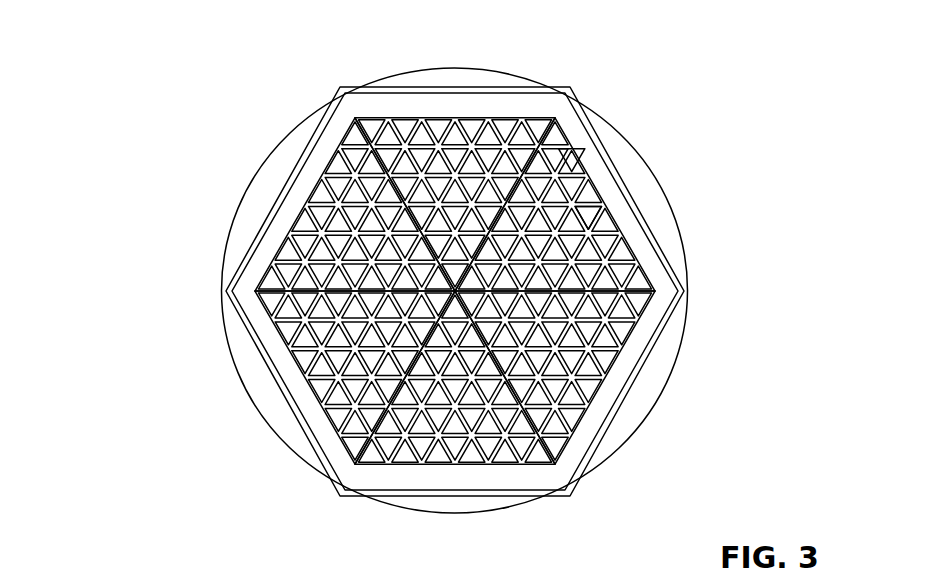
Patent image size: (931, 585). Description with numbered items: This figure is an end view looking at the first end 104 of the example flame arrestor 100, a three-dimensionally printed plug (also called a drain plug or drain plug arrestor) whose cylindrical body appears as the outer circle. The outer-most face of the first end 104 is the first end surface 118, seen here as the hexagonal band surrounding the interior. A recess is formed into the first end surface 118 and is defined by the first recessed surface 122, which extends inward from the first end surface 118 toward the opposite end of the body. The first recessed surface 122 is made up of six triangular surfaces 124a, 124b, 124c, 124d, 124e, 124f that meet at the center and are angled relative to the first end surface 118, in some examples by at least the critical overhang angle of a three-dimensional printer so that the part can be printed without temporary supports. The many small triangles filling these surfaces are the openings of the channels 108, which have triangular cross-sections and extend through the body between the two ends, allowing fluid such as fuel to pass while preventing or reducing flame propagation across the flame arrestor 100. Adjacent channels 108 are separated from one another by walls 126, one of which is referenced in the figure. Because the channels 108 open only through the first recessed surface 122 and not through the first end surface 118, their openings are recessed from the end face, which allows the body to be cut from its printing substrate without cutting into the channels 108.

The flame arrestor 100 is at (150, 50).
The first end 104 is at (355, 78).
The channels 108 is at (552, 162).
The first end surface 118 is at (245, 293).
The first recessed surface 122 is at (317, 250).
The triangular surface 124a is at (320, 205).
The triangular surface 124b is at (447, 120).
The triangular surface 124c is at (610, 262).
The triangular surface 124d is at (585, 375).
The triangular surface 124e is at (443, 430).
The triangular surface 124f is at (343, 375).
The walls 126 is at (577, 200).